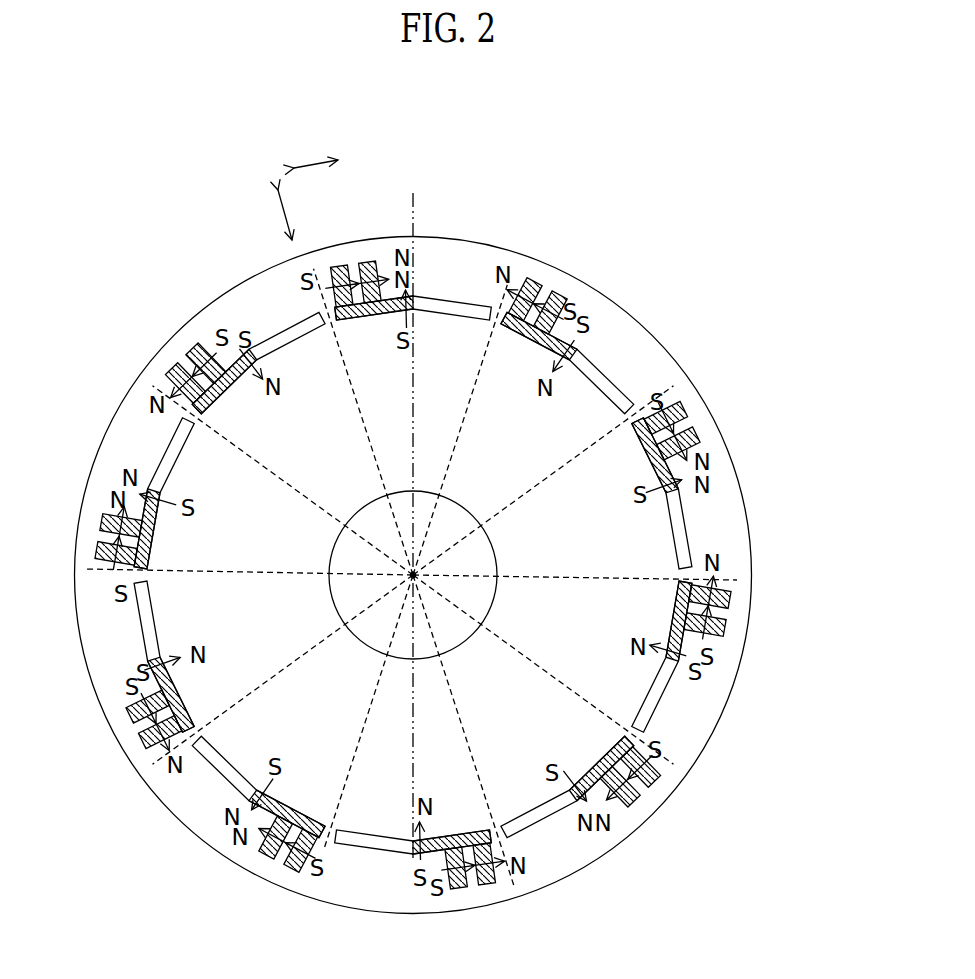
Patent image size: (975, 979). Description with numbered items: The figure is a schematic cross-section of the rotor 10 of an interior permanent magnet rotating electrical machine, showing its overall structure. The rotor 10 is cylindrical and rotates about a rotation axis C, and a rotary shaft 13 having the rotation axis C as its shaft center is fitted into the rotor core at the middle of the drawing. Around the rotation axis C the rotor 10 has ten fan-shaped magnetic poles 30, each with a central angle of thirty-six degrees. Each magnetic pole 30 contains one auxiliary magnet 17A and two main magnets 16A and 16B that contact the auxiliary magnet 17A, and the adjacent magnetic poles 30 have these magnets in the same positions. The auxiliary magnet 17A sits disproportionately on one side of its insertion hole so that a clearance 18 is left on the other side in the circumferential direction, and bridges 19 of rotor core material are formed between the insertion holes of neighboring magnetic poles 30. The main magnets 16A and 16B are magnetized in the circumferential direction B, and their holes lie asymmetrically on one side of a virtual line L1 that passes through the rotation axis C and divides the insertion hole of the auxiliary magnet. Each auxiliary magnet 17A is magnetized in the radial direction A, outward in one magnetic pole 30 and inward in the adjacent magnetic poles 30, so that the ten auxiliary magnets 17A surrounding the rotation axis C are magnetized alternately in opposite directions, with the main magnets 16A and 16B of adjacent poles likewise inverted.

The rotor 10 is at (636, 212).
The rotary shaft 13 is at (457, 637).
The main magnet 16A is at (337, 268).
The main magnet 16B is at (370, 262).
The auxiliary magnet 17A is at (378, 313).
The clearance 18 is at (443, 313).
The bridge 19 is at (327, 327).
The magnetic pole 30 is at (429, 250).
The rotation axis C is at (415, 574).
The virtual line L1 is at (420, 440).
The radial direction A is at (275, 215).
The circumferential direction B is at (316, 149).